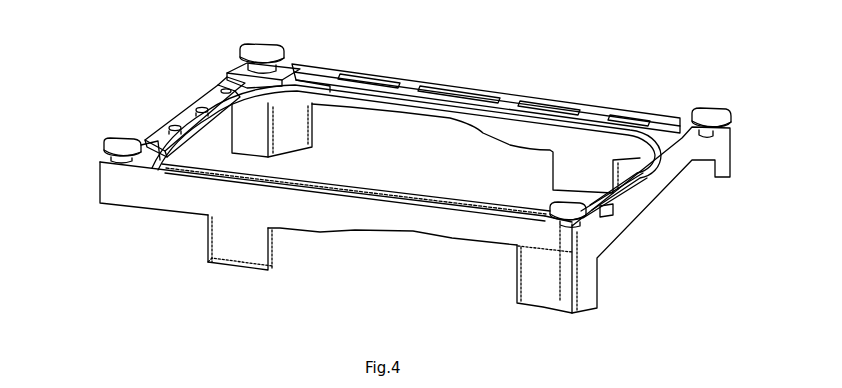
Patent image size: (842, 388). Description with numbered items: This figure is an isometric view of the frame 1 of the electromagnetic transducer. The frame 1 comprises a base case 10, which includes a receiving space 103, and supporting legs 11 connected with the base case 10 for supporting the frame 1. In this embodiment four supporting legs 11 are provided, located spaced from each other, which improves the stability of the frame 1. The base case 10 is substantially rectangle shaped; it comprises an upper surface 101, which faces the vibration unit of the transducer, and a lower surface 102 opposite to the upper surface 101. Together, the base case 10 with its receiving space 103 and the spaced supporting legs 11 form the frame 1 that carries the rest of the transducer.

The frame 1 is at (451, 28).
The base case 10 is at (120, 197).
The supporting legs 11 is at (243, 257).
The upper surface 101 is at (190, 109).
The lower surface 102 is at (453, 236).
The receiving space 103 is at (416, 141).